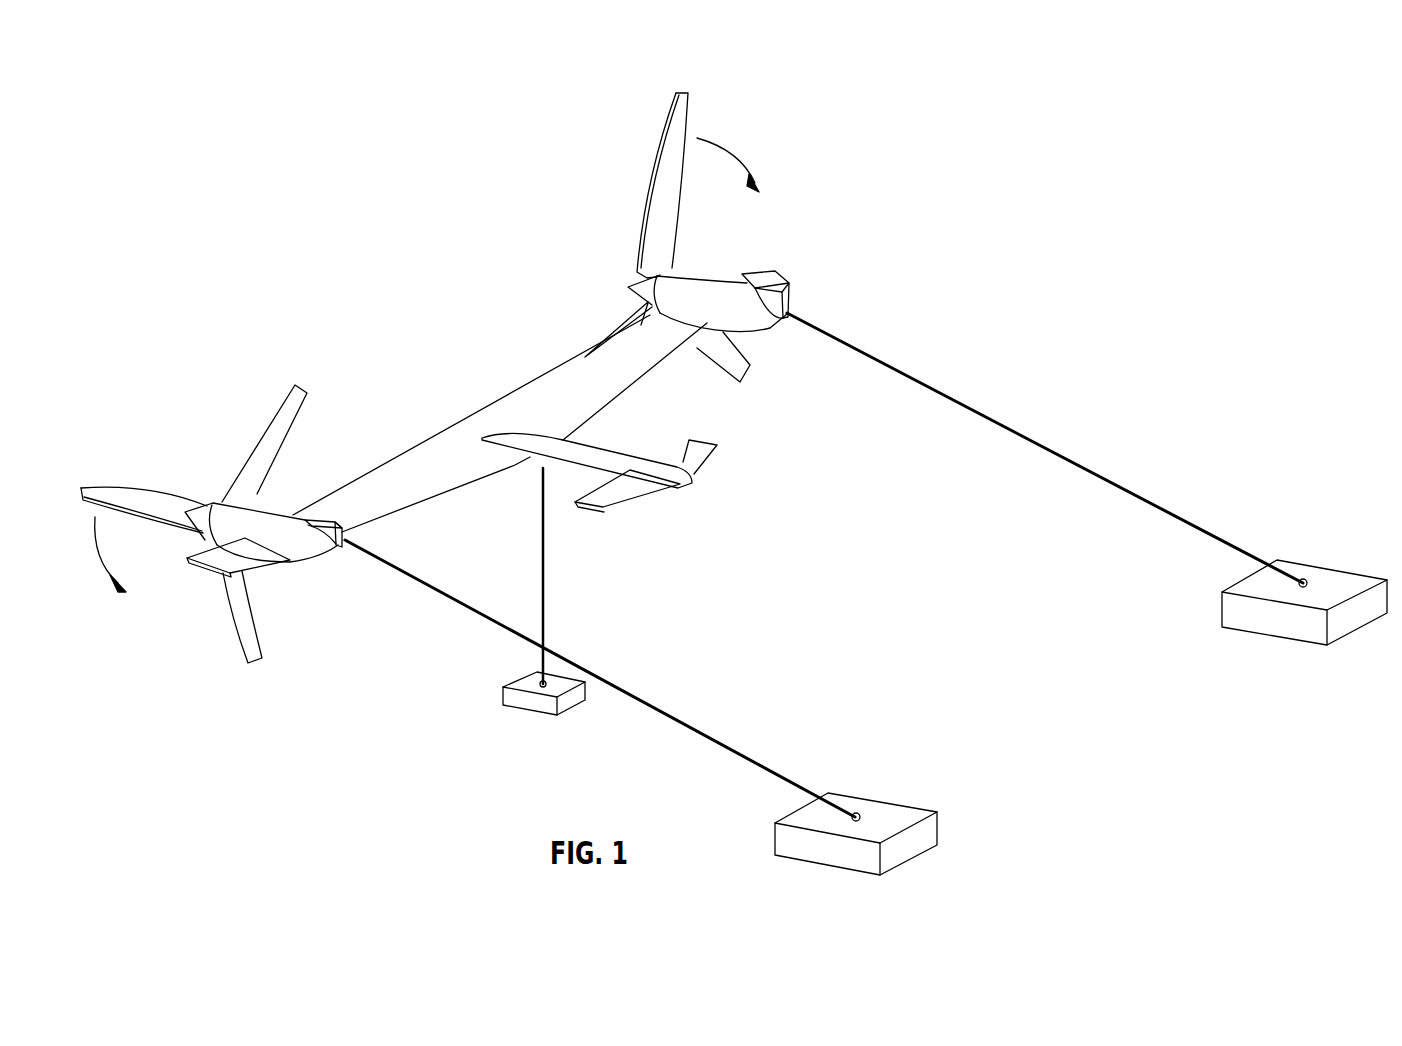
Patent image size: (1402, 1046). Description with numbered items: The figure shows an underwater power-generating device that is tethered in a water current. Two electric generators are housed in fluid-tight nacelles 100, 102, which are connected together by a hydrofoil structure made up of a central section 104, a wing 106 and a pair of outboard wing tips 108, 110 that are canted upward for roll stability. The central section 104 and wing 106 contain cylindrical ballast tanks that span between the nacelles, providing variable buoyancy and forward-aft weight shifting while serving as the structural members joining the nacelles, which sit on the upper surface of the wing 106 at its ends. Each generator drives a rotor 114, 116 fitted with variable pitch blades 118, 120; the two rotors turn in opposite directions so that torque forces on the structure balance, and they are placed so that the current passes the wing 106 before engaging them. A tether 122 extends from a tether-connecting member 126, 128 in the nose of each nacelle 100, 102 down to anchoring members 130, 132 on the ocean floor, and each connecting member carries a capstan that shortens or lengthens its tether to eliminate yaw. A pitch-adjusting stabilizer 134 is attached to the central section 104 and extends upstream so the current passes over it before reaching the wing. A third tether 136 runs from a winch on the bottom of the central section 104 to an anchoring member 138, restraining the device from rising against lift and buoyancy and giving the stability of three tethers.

The nacelle 100 is at (274, 519).
The nacelle 102 is at (699, 284).
The central section 104 is at (592, 445).
The wing 106 is at (540, 386).
The wing tip 108 is at (194, 561).
The wing tip 110 is at (791, 281).
The rotor 114 is at (215, 501).
The rotor 116 is at (630, 292).
The variable pitch blade 118 is at (247, 640).
The variable pitch blade 120 is at (742, 373).
The tether 122 is at (625, 690).
The tether-connecting member 126 is at (316, 514).
The tether-connecting member 128 is at (762, 274).
The anchoring member 130 is at (882, 801).
The anchoring member 132 is at (1320, 571).
The pitch-adjusting stabilizer 134 is at (634, 490).
The third tether 136 is at (549, 566).
The anchoring member 138 is at (531, 677).